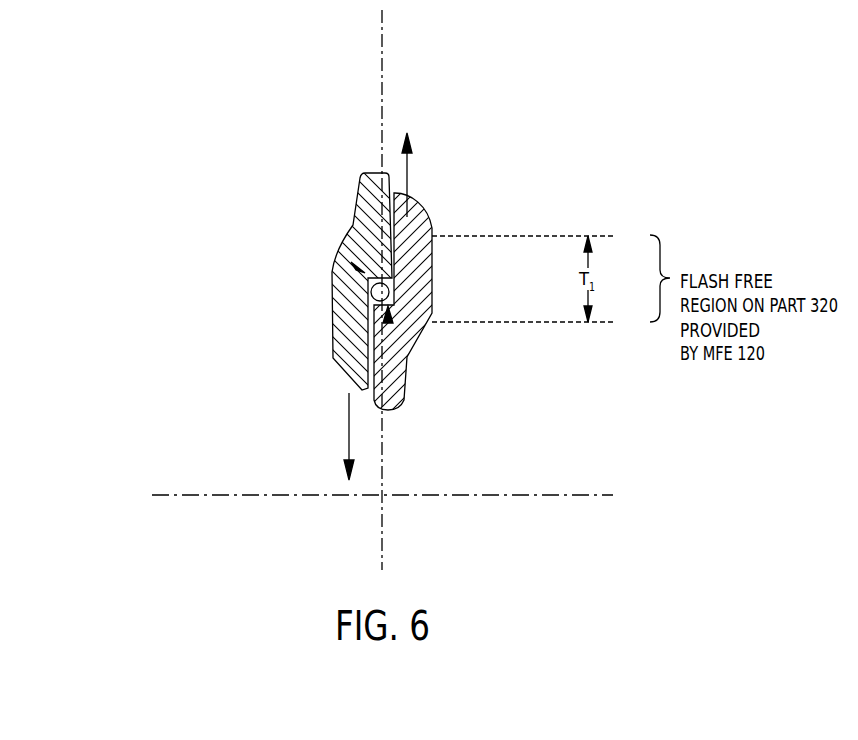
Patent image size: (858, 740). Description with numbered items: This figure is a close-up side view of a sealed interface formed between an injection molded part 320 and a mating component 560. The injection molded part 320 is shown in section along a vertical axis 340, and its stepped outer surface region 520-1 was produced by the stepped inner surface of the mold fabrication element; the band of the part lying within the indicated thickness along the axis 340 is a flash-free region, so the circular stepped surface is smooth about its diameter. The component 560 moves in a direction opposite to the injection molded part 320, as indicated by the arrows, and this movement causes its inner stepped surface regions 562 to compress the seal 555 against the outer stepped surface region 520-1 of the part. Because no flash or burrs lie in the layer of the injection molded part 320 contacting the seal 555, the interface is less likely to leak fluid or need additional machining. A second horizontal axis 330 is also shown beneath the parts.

The axis 340 is at (391, 55).
The axis 330 is at (560, 489).
The component 560 is at (368, 203).
The inner stepped surface regions 562 is at (353, 266).
The injection molded part 320 is at (428, 228).
The seal 555 is at (378, 292).
The stepped outer surface region 520-1 is at (388, 323).